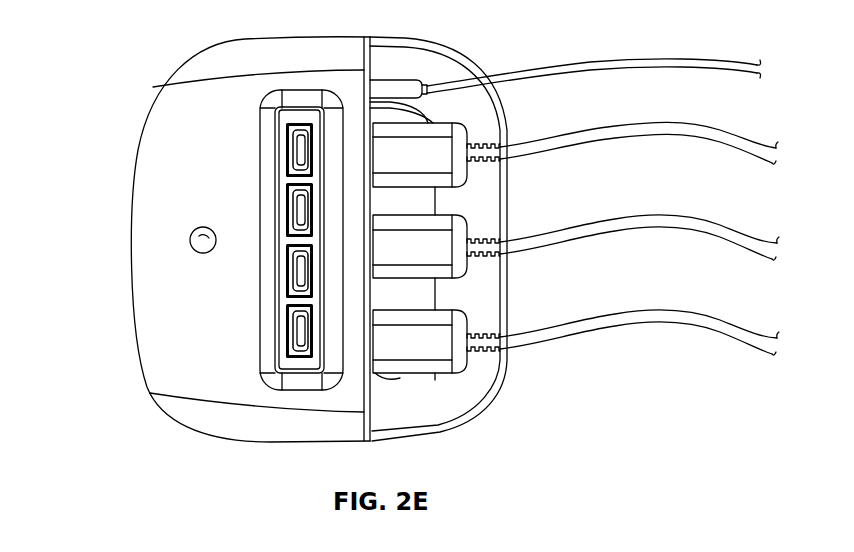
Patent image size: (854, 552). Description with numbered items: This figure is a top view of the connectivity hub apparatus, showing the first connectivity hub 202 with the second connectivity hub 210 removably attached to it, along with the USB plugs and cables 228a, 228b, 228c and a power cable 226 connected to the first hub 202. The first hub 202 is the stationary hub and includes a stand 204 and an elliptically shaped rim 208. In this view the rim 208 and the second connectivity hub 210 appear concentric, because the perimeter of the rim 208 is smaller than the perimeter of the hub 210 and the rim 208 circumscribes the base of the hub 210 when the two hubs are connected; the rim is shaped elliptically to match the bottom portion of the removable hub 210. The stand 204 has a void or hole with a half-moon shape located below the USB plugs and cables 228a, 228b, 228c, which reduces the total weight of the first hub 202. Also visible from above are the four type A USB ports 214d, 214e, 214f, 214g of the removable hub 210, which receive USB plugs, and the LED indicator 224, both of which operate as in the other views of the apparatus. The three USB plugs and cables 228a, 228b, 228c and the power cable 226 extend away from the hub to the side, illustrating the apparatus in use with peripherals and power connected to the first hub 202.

The first connectivity hub 202 is at (231, 39).
The stand 204 is at (423, 433).
The elliptically shaped rim 208 is at (300, 384).
The second connectivity hub 210 is at (311, 378).
The type A USB port 214d is at (287, 144).
The type A USB port 214e is at (287, 210).
The type A USB port 214f is at (287, 268).
The type A USB port 214g is at (287, 326).
The LED indicator 224 is at (190, 242).
The power cable 226 is at (593, 63).
The USB plug and cable 228a is at (595, 134).
The USB plug and cable 228b is at (597, 229).
The USB plug and cable 228c is at (602, 323).